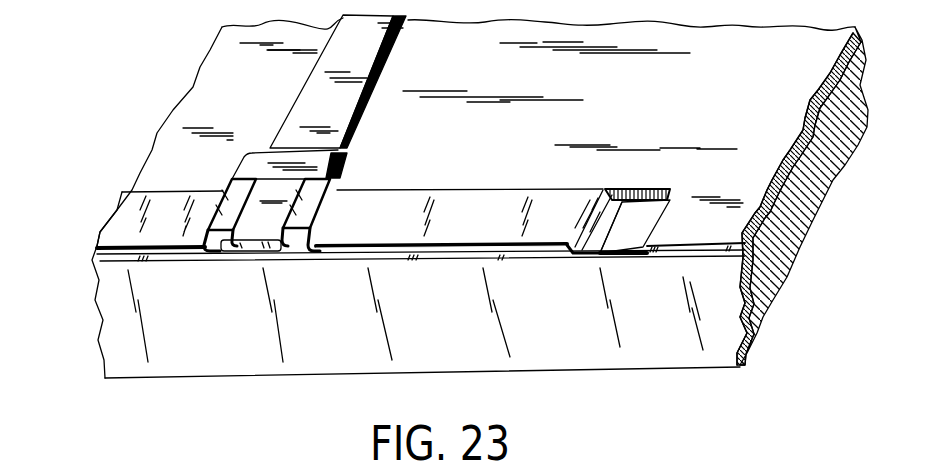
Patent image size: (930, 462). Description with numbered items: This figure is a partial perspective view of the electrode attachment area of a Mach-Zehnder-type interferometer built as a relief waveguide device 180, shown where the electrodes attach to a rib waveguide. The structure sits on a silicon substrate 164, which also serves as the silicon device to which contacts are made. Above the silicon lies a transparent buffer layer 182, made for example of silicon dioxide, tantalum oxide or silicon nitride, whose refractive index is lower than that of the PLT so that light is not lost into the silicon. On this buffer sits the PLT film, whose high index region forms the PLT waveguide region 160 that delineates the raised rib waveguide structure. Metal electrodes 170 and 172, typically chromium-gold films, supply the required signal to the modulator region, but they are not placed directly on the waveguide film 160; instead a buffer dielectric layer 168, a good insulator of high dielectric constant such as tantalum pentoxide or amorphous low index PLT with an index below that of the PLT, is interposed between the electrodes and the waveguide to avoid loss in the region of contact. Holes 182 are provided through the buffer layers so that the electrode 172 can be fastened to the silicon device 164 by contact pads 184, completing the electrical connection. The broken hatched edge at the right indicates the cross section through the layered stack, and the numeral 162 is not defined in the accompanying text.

The PLT waveguide region 160 is at (370, 63).
The substrate layer 162 is at (703, 250).
The silicon substrate 164 is at (583, 335).
The buffer dielectric layer 168 is at (253, 160).
The metal electrode 170 is at (130, 213).
The metal electrode 172 is at (397, 202).
The relief waveguide device 180 is at (142, 110).
The transparent buffer layer 182 is at (637, 187).
The contact pads 184 is at (622, 246).